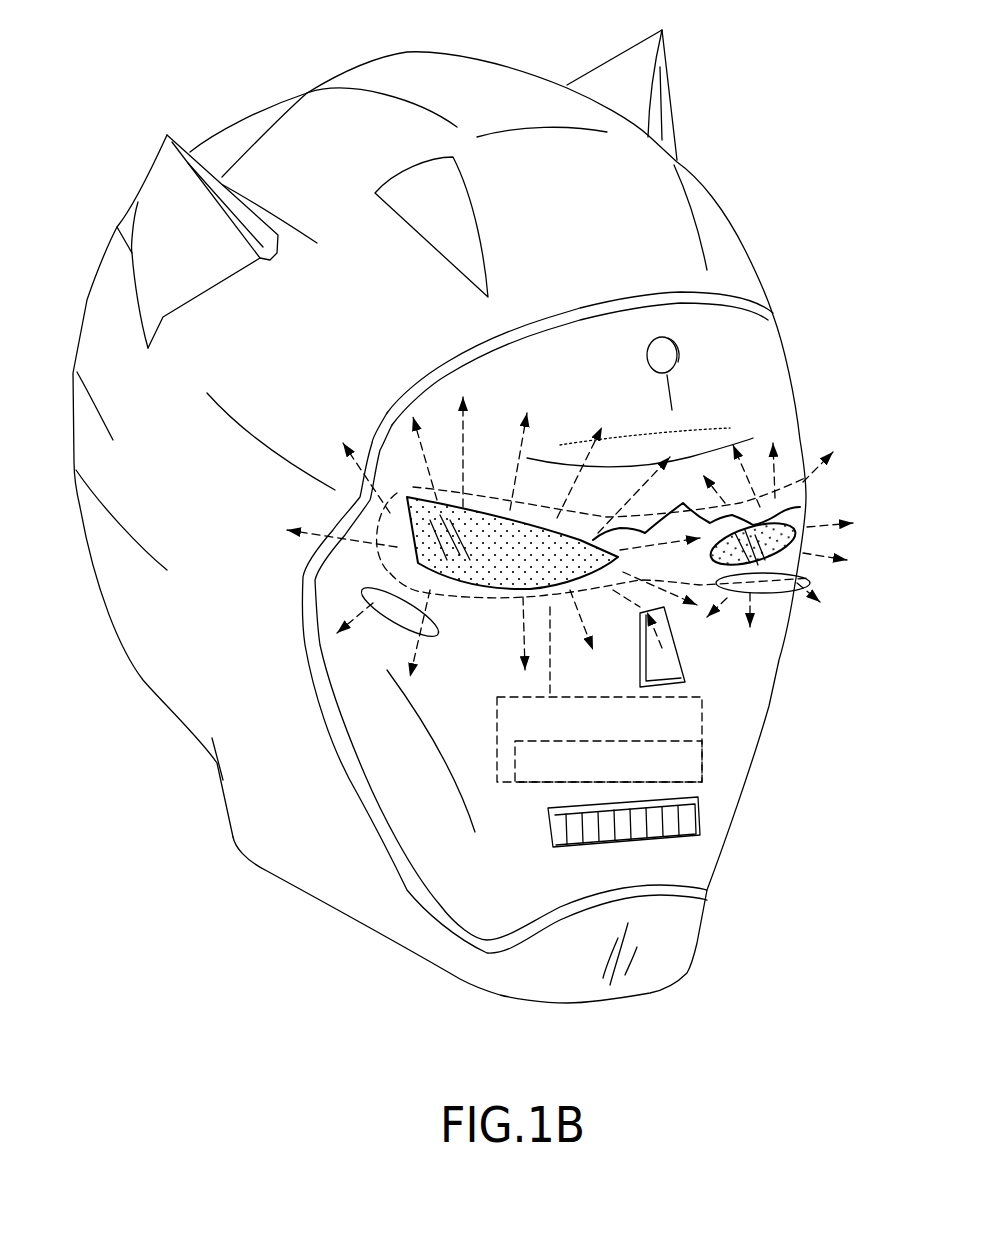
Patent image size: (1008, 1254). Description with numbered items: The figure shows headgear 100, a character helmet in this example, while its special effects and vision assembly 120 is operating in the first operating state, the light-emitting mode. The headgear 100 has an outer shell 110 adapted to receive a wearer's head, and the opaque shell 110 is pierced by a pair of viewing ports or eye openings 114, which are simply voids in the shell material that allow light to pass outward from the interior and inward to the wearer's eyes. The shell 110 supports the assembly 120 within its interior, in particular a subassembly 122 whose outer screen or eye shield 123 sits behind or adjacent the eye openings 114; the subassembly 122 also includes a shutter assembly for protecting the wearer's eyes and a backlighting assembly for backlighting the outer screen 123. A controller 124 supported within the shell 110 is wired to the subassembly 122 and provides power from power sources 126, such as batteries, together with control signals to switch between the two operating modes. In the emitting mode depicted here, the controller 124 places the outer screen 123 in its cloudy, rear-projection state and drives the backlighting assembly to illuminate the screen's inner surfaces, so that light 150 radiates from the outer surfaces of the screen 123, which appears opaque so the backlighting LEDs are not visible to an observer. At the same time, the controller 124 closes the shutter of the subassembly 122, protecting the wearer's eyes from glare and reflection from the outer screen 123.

The headgear 100 is at (704, 81).
The outer shell 110 is at (552, 84).
The eye openings 114 is at (696, 508).
The special effects and vision assembly 120 is at (772, 608).
The subassembly 122 is at (482, 476).
The outer screen 123 is at (443, 533).
The controller 124 is at (706, 708).
The power sources 126 is at (715, 780).
The light 150 is at (363, 592).